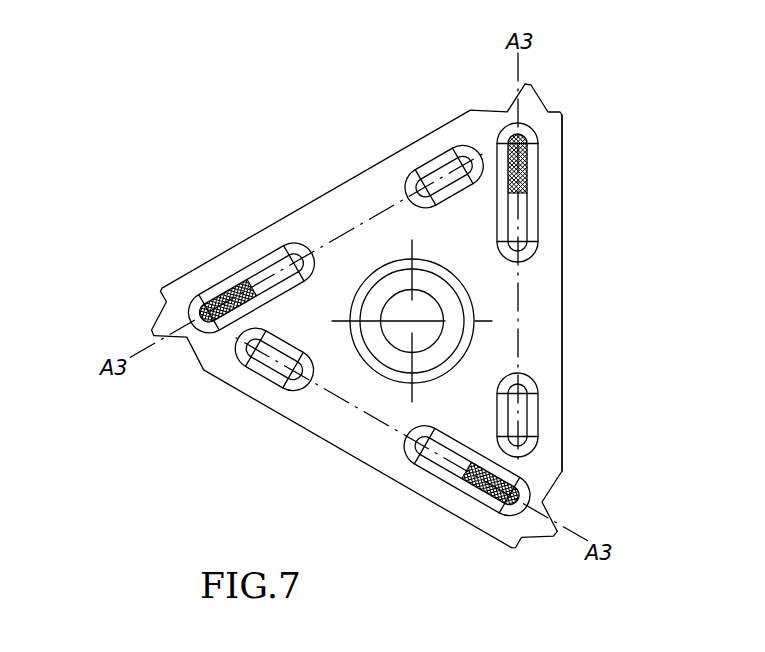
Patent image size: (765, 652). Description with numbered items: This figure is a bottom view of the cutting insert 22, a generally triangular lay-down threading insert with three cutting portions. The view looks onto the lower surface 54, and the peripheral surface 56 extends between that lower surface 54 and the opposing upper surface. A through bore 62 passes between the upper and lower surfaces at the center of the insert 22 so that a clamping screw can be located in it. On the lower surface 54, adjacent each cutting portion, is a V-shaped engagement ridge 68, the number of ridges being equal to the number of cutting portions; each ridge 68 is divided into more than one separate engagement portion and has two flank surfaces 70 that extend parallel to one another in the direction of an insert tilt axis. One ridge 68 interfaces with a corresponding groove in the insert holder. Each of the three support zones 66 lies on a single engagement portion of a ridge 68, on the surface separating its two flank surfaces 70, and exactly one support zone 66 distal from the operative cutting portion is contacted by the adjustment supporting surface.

The cutting insert 22 is at (186, 175).
The lower surface 54 is at (378, 421).
The peripheral surface 56 is at (563, 357).
The through bore 62 is at (401, 302).
The support zone 66 is at (212, 290).
The V-shaped engagement ridge 68 is at (273, 248).
The flank surface 70 is at (246, 262).